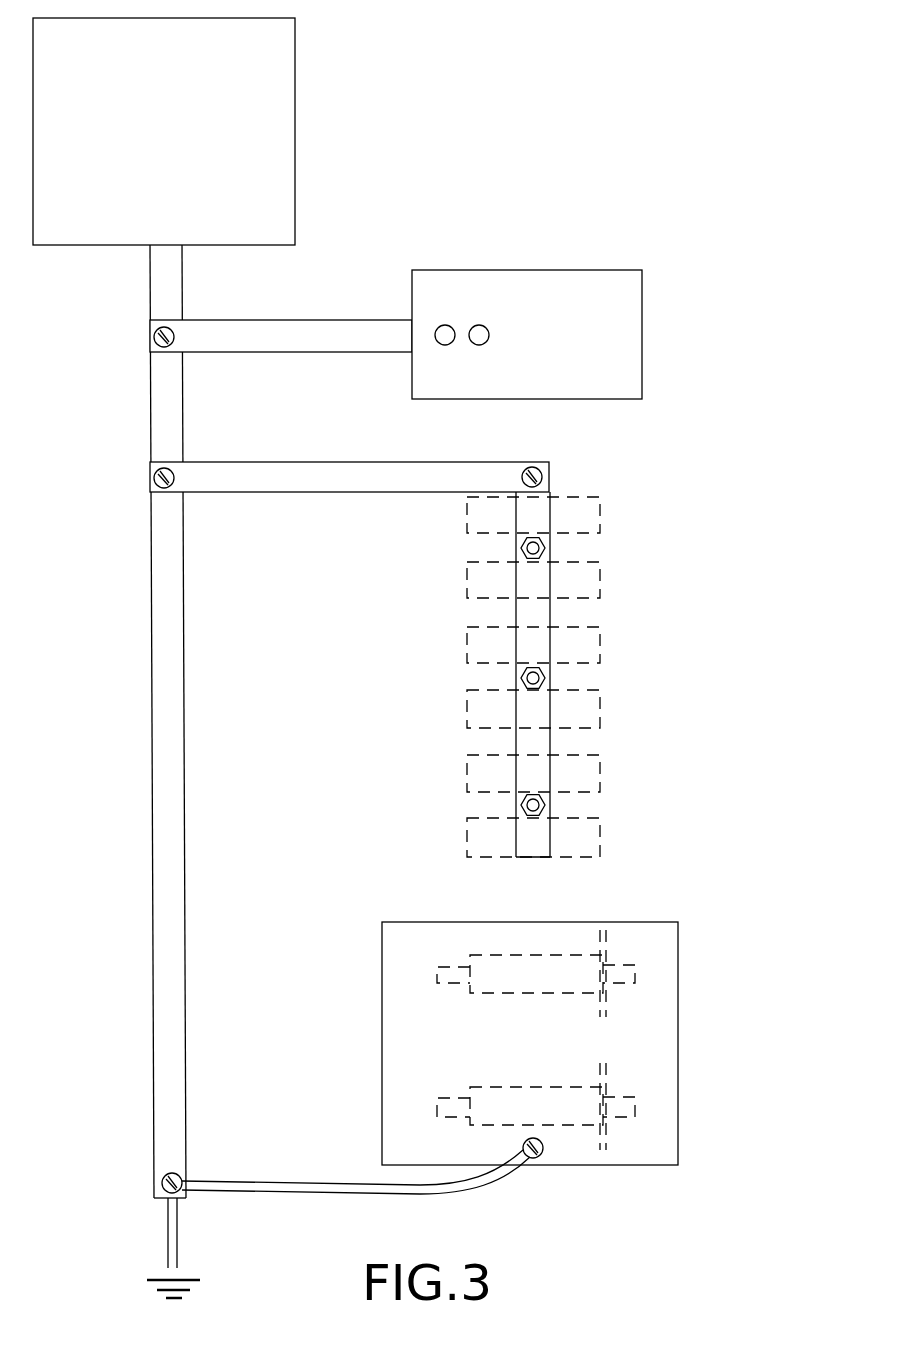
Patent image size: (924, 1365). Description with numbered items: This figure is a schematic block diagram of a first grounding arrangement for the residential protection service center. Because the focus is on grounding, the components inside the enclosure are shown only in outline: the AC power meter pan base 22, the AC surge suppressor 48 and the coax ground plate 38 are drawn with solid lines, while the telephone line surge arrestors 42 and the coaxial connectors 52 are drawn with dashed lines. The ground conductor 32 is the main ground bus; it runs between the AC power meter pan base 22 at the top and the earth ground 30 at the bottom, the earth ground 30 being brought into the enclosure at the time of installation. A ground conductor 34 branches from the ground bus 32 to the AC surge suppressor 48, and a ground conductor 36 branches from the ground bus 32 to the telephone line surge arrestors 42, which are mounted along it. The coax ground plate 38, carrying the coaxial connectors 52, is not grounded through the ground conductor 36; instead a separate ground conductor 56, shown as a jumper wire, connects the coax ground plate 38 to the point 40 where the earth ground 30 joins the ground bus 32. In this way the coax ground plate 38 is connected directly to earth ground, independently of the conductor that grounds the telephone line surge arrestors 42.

The AC power meter pan base 22 is at (240, 142).
The earth ground 30 is at (167, 1240).
The ground conductor 32 is at (168, 828).
The ground conductor 34 is at (303, 333).
The ground conductor 36 is at (309, 477).
The coax ground plate 38 is at (655, 1033).
The point 40 is at (165, 1177).
The telephone line surge arrestors 42 is at (577, 513).
The AC surge suppressor 48 is at (600, 327).
The coaxial connectors 52 is at (517, 975).
The ground conductor 56 is at (322, 1195).